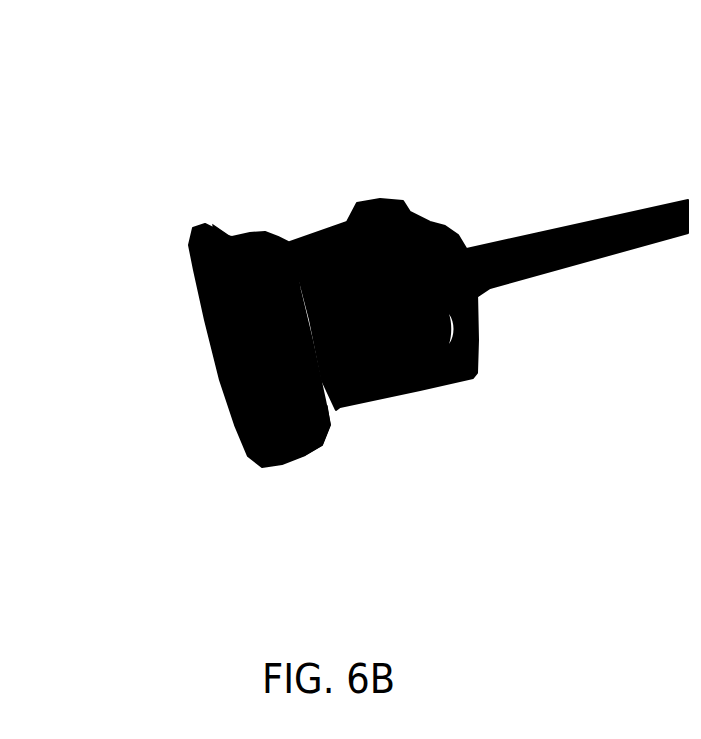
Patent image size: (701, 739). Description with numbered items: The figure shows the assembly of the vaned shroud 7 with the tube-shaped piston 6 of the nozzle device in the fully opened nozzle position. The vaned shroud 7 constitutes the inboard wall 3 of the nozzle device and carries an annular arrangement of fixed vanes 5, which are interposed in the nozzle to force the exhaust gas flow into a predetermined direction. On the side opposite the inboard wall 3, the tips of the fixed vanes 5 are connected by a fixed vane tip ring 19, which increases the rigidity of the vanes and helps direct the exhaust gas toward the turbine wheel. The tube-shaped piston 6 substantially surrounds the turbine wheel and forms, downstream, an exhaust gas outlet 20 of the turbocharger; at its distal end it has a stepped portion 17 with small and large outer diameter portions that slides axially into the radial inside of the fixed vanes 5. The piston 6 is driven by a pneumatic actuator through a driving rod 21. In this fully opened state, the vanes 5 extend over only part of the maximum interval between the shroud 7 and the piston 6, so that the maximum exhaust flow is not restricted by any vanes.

The inboard wall 3 is at (244, 237).
The fixed vanes 5 is at (290, 450).
The tube-shaped piston 6 is at (383, 400).
The vaned shroud 7 is at (212, 362).
The stepped portion 17 is at (297, 237).
The fixed vane tip ring 19 is at (268, 235).
The exhaust gas outlet 20 is at (477, 325).
The driving rod 21 is at (557, 237).